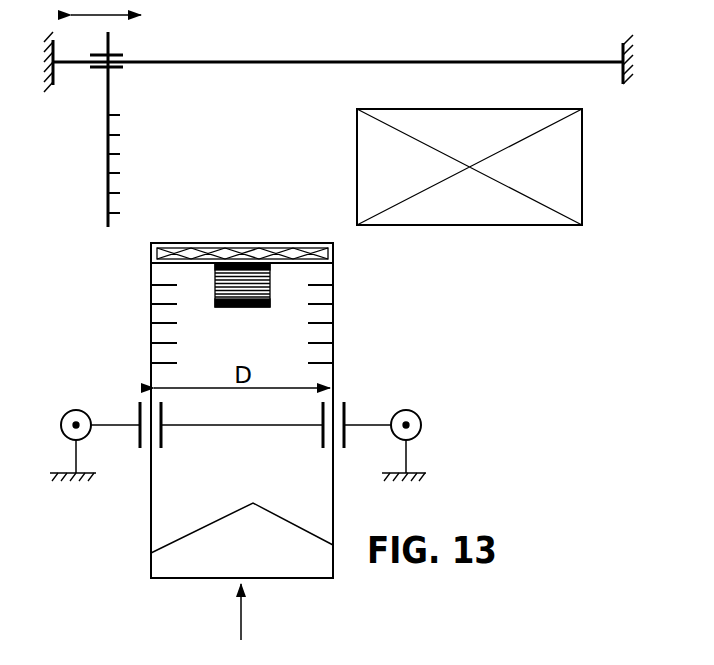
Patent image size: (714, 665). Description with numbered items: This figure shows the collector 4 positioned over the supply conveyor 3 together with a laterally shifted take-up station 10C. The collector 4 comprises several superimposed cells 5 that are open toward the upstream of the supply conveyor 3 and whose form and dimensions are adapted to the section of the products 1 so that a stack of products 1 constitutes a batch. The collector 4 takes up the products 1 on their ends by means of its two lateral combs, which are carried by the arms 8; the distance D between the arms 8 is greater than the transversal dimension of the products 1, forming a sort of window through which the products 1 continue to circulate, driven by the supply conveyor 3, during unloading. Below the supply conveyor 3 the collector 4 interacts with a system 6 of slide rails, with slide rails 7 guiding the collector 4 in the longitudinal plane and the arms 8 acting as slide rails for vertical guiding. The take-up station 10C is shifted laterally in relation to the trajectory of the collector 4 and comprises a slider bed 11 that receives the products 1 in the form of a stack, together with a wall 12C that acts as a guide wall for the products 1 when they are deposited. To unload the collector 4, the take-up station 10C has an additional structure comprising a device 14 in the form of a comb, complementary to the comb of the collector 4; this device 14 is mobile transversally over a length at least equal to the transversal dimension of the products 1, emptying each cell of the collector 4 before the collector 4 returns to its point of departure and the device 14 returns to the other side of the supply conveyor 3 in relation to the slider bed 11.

The products 1 is at (202, 255).
The supply conveyor 3 is at (248, 308).
The collector 4 is at (147, 289).
The cells 5 is at (167, 353).
The system of slide rails 6 is at (361, 409).
The slide rails 7 is at (108, 422).
The arms 8 is at (242, 515).
The take-up station 10C is at (591, 137).
The slider bed 11 is at (535, 227).
The wall 12C is at (565, 188).
The device in the form of a comb 14 is at (84, 103).